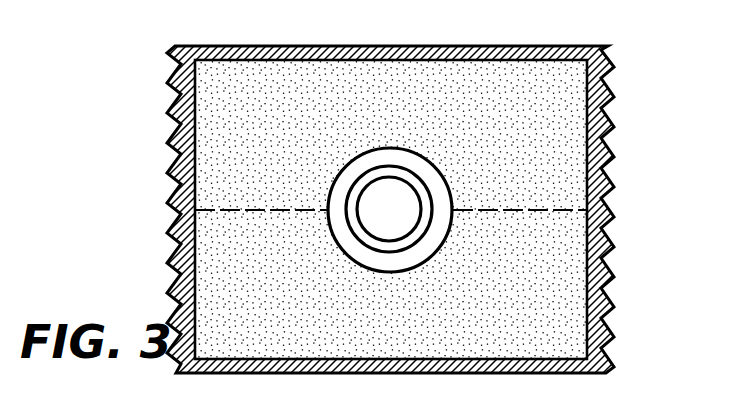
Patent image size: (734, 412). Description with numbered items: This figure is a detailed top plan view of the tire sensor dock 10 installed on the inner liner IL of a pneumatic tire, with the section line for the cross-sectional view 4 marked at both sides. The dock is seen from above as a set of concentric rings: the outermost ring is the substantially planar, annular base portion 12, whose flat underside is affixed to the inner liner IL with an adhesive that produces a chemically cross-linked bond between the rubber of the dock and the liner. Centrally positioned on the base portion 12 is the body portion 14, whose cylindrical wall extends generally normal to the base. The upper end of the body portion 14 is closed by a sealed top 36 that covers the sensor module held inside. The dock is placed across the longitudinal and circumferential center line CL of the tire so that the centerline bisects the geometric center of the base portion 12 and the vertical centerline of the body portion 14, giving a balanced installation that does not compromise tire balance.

The tire sensor dock 10 is at (391, 144).
The base portion 12 is at (352, 173).
The body portion 14 is at (433, 180).
The sealed top 36 is at (381, 208).
The center line CL is at (539, 213).
The inner liner IL is at (558, 277).
The section line 4- 4 is at (160, 210).